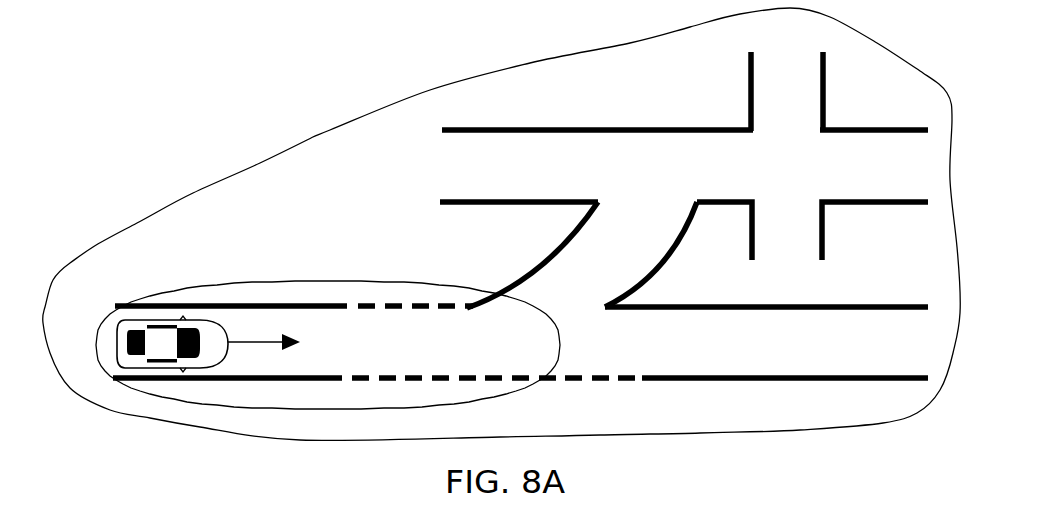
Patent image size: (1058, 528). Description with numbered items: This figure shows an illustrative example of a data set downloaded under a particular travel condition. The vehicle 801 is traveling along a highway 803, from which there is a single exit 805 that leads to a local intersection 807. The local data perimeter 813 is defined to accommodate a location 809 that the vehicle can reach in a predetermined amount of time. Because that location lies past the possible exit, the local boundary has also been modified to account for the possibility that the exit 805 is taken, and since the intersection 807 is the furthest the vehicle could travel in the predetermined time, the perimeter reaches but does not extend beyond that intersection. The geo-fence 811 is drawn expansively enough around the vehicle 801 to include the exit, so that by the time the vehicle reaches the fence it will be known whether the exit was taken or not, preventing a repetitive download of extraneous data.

The vehicle 801 is at (137, 320).
The highway 803 is at (290, 325).
The exit 805 is at (580, 270).
The local intersection 807 is at (770, 153).
The reachable location 809 is at (867, 330).
The geo-fence 811 is at (402, 277).
The local data perimeter 813 is at (333, 127).